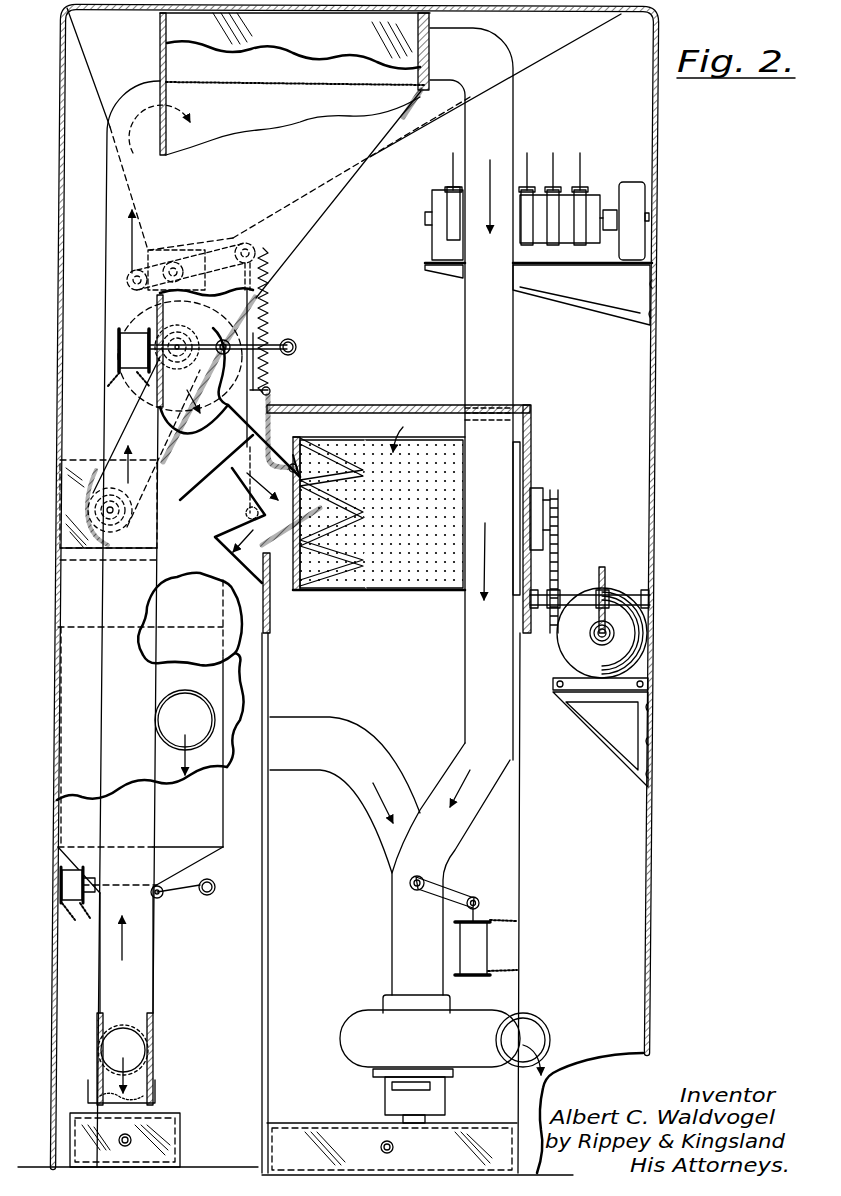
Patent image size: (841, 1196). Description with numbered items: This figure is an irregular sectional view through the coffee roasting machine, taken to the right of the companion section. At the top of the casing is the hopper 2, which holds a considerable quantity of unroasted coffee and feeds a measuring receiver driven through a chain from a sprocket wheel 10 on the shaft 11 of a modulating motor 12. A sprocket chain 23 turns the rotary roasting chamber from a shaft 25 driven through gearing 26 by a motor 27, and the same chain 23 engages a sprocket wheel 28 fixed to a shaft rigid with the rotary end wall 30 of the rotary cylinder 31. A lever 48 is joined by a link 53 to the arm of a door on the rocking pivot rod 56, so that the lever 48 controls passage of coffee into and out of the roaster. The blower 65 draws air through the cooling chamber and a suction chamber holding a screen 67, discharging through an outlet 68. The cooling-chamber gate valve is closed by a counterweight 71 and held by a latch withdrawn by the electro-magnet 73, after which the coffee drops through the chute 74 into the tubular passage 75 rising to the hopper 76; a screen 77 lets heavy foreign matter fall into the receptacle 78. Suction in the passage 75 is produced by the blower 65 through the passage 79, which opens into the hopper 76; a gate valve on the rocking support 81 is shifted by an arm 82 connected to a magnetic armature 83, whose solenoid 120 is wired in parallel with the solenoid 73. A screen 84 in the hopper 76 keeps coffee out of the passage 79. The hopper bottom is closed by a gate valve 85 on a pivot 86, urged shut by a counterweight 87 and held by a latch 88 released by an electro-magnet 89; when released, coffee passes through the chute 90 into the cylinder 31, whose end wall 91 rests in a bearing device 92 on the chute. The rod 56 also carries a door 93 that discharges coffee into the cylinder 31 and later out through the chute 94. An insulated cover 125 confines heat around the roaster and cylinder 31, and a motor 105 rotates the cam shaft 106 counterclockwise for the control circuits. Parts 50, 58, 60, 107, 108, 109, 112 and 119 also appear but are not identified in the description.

The hopper 2 is at (538, 52).
The sprocket wheel 10 is at (88, 510).
The shaft 11 is at (191, 411).
The modulating motor 12 is at (78, 468).
The sprocket chain 23 is at (558, 550).
The shaft 25 is at (620, 598).
The gearing 26 is at (607, 627).
The motor 27 is at (552, 645).
The sprocket wheel 28 is at (558, 507).
The rotary end wall 30 is at (520, 463).
The rotary cylinder 31 is at (423, 590).
The lever 48 is at (221, 252).
The spring 50 is at (270, 305).
The link 53 is at (272, 388).
The rocking pivot rod 56 is at (276, 530).
The louvers 58 is at (340, 590).
The base 60 is at (305, 1130).
The blower 65 is at (350, 1030).
The screen 67 is at (360, 790).
The outlet 68 is at (537, 1037).
The counterweight 71 is at (190, 893).
The electro-magnet 73 is at (55, 910).
The chute 74 is at (133, 1050).
The tubular passage 75 is at (143, 958).
The hopper 76 is at (333, 190).
The screen 77 is at (145, 1097).
The receptacle 78 is at (160, 1140).
The passage 79 is at (500, 338).
The rocking support 81 is at (410, 897).
The arm 82 is at (445, 896).
The magnetic armature 83 is at (455, 920).
The screen 84 is at (263, 86).
The gate valve 85 is at (200, 340).
The pivot 86 is at (231, 343).
The counterweight 87 is at (297, 345).
The latch 88 is at (172, 332).
The electro-magnet 89 is at (120, 352).
The chute 90 is at (230, 445).
The end wall 91 is at (275, 560).
The bearing device 92 is at (293, 462).
The door 93 is at (258, 512).
The chute 94 is at (228, 518).
The motor 105 is at (630, 190).
The cam shaft 106 is at (618, 265).
The coupling 107 is at (582, 212).
The relay 108 is at (557, 245).
The relay 109 is at (528, 245).
The relay 112 is at (452, 240).
The motor 119 is at (433, 1102).
The solenoid 120 is at (480, 933).
The insulated cover 125 is at (376, 405).